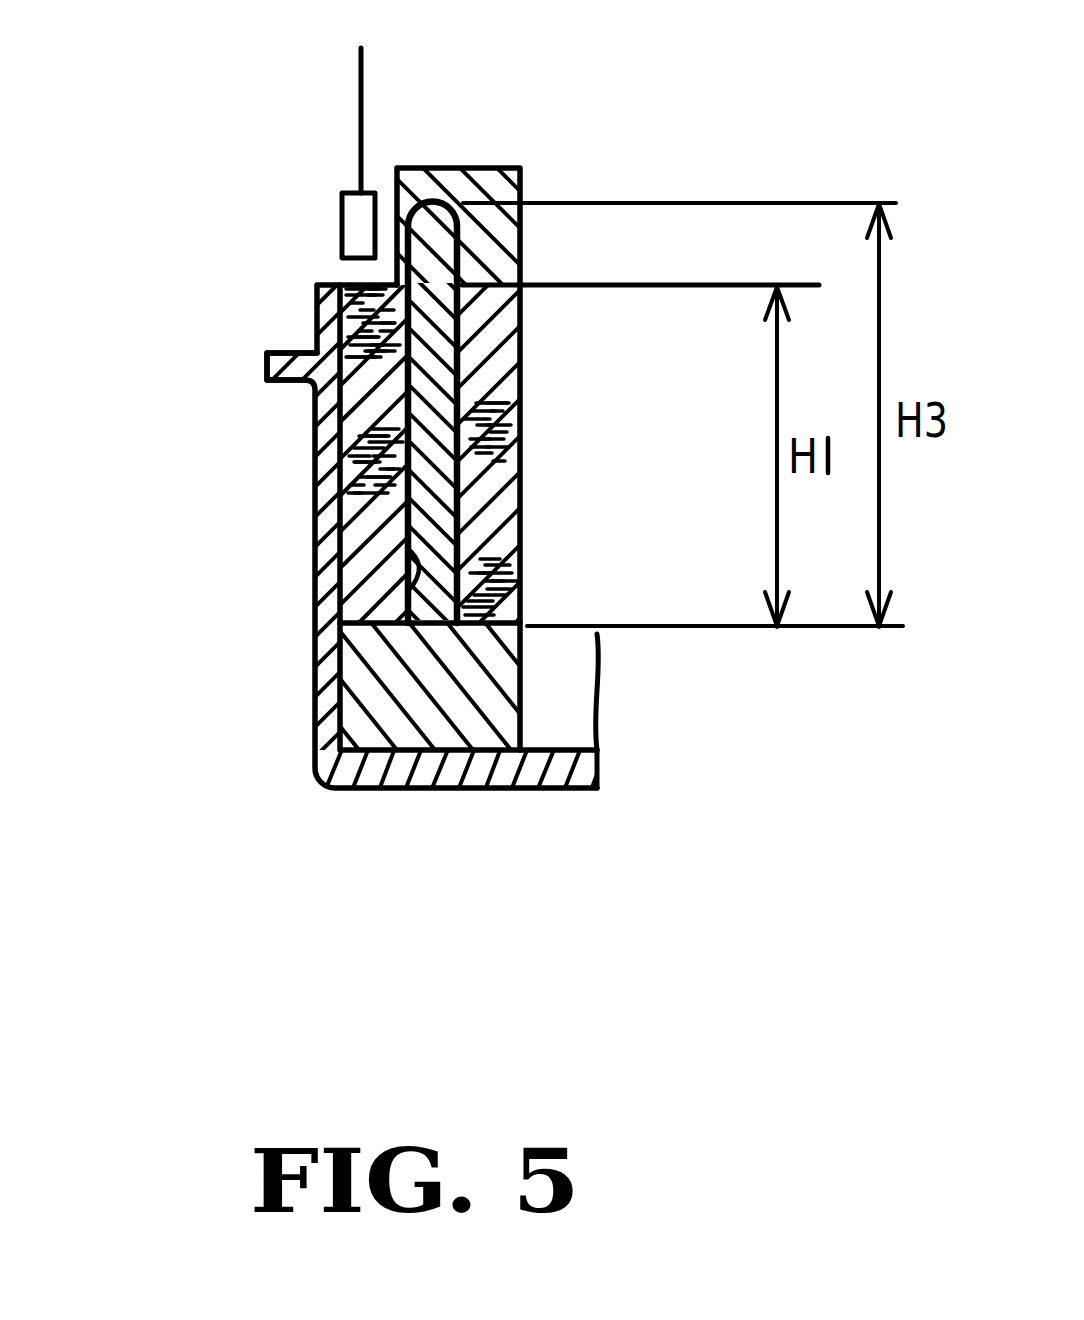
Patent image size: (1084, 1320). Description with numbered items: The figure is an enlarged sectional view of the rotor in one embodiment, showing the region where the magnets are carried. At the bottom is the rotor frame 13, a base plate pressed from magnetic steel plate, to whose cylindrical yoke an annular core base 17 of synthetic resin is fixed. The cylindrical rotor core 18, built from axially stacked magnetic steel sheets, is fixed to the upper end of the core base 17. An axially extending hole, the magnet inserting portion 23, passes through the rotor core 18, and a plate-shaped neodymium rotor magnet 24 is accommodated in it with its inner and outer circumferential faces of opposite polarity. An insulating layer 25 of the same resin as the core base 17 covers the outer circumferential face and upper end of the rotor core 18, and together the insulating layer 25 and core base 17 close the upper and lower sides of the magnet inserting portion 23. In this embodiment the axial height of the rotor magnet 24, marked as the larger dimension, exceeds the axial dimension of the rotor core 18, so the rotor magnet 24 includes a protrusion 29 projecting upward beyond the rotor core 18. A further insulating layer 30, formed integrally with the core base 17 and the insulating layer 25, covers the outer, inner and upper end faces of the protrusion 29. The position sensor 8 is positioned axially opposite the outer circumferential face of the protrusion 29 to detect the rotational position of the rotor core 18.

The position sensor 8 is at (342, 233).
The rotor frame 13 is at (444, 789).
The core base 17 is at (350, 698).
The rotor core 18 is at (524, 501).
The magnet inserting portion 23 is at (407, 548).
The rotor magnet 24 is at (410, 492).
The insulating layer 25 is at (317, 320).
The protrusion 29 is at (438, 170).
The insulating layer 30 is at (523, 168).